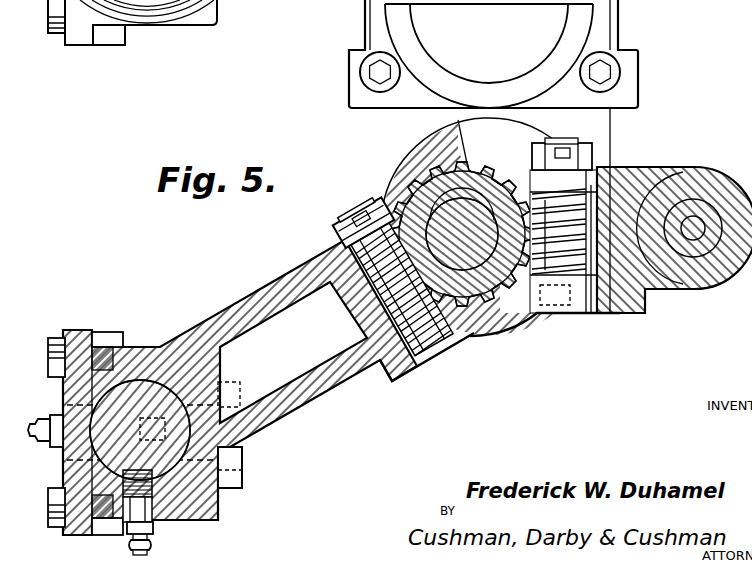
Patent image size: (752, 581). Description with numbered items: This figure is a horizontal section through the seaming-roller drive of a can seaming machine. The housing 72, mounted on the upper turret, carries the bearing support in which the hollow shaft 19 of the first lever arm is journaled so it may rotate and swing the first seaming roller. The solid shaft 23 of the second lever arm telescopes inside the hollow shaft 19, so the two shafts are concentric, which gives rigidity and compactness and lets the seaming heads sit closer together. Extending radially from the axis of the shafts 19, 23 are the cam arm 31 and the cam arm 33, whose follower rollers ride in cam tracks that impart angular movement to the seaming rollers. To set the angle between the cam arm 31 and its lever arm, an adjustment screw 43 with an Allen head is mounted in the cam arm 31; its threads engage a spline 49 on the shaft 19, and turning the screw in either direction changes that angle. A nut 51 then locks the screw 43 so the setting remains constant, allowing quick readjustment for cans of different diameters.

The shaft 19 is at (427, 193).
The shaft 23 is at (532, 262).
The cam arm 31 is at (267, 283).
The cam arm 33 is at (640, 167).
The adjustment screw 43 is at (450, 293).
The spline 49 is at (420, 203).
The nut 51 is at (331, 224).
The housing 72 is at (638, 65).